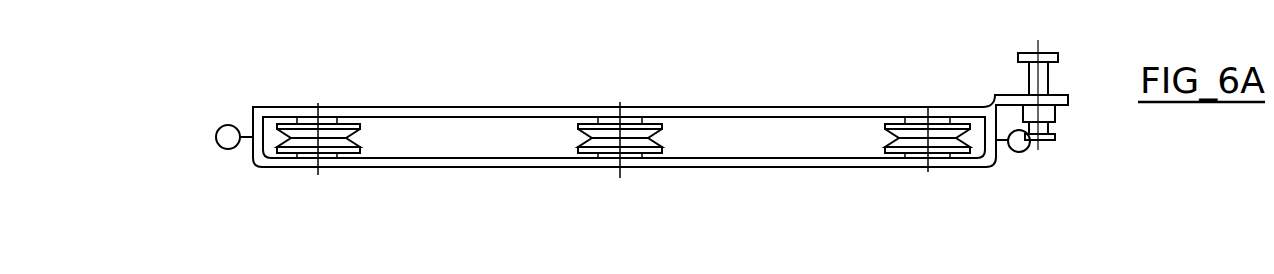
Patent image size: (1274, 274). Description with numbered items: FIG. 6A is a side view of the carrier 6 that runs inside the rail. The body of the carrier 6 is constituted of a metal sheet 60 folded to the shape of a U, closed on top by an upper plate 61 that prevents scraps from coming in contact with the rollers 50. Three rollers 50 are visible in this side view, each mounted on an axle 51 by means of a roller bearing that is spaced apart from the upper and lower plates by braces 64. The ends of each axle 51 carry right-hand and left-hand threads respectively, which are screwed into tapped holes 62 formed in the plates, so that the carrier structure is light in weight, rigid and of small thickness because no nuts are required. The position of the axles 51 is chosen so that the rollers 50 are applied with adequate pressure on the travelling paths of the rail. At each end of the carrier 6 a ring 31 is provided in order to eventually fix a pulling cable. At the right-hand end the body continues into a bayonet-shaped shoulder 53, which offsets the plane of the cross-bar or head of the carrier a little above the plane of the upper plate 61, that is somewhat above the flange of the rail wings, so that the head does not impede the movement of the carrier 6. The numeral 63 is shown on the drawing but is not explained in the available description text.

The carrier 6 is at (550, 106).
The rings 31 is at (215, 134).
The rollers 50 is at (350, 128).
The axles 51 is at (317, 168).
The bayonet-shaped shoulder 53 is at (982, 103).
The metal sheet 60 is at (995, 160).
The upper plate 61 is at (377, 106).
The tapped holes 62 is at (637, 106).
The upper wall end portion 63 is at (915, 107).
The braces 64 is at (955, 158).